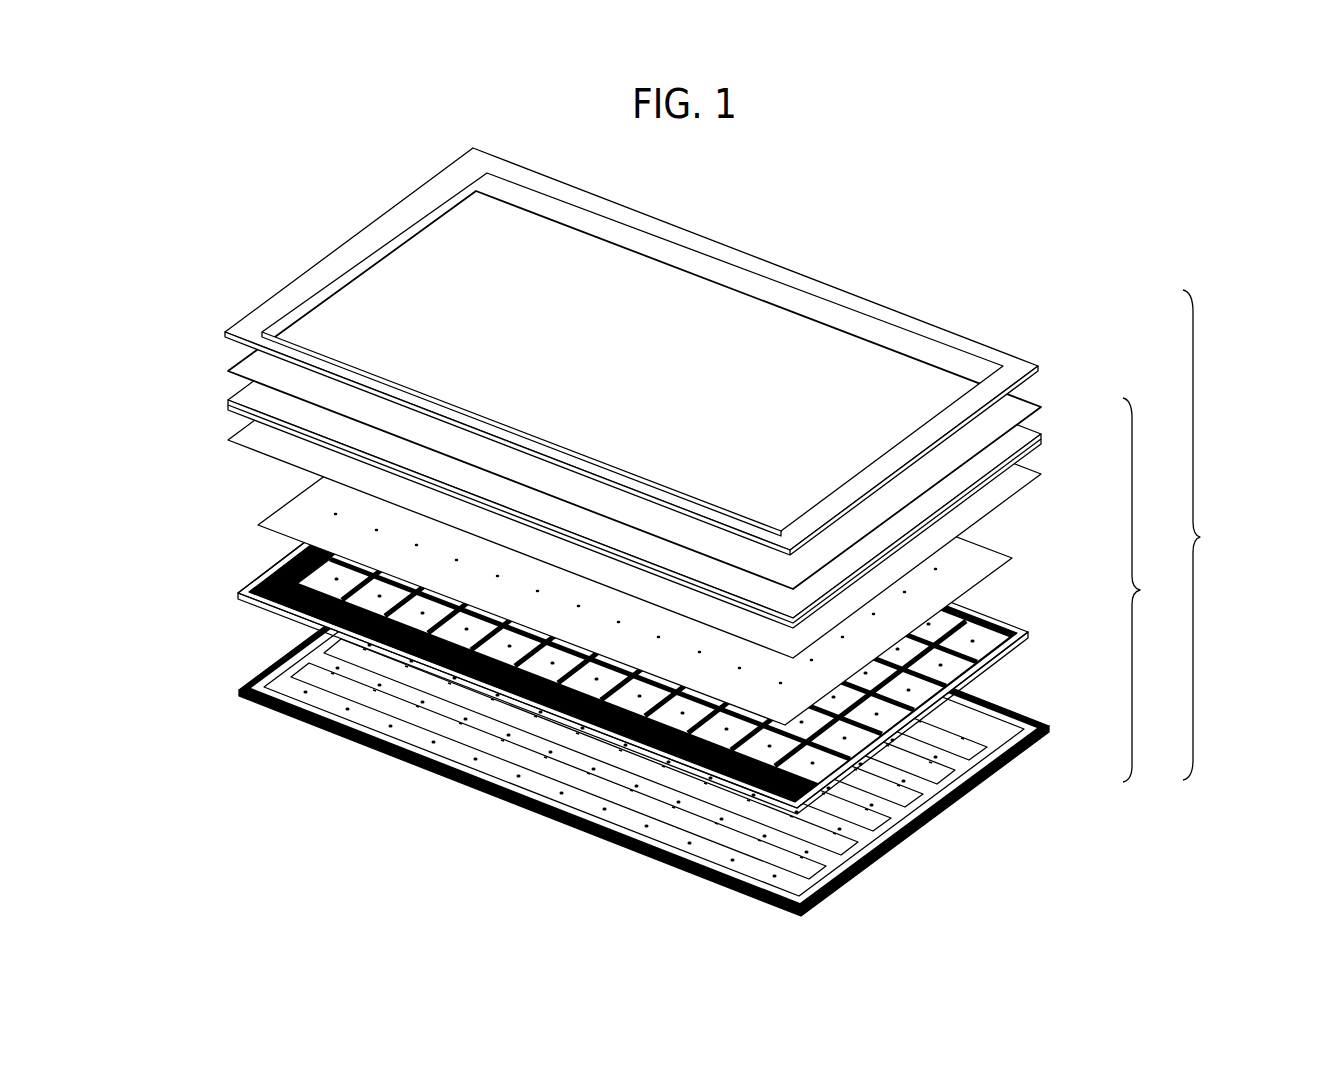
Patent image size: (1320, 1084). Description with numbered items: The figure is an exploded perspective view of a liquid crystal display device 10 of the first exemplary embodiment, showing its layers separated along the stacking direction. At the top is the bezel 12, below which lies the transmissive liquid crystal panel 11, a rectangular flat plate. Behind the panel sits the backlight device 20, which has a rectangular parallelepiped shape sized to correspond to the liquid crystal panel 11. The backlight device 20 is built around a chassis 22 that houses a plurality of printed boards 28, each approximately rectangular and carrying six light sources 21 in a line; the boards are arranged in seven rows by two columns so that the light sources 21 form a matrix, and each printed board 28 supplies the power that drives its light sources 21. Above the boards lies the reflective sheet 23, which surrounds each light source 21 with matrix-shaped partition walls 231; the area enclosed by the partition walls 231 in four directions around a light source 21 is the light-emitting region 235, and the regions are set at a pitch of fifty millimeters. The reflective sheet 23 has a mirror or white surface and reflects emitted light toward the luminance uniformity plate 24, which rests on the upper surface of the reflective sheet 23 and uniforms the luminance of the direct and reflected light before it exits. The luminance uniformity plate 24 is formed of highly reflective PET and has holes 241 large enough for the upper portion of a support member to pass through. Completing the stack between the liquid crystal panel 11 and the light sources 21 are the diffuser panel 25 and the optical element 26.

The liquid crystal display device 10 is at (1213, 535).
The transmissive liquid crystal panel 11 is at (1020, 398).
The bezel 12 is at (997, 350).
The backlight device 20 is at (1153, 590).
The light source 21 is at (348, 710).
The chassis 22 is at (1007, 708).
The reflective sheet 23 is at (1030, 633).
The partition wall 231 is at (303, 542).
The light-emitting region 235 is at (312, 602).
The luminance uniformity plate 24 is at (1012, 560).
The hole 241 is at (338, 518).
The diffuser panel 25 is at (1040, 478).
The optical element 26 is at (1040, 437).
The printed board 28 is at (990, 742).